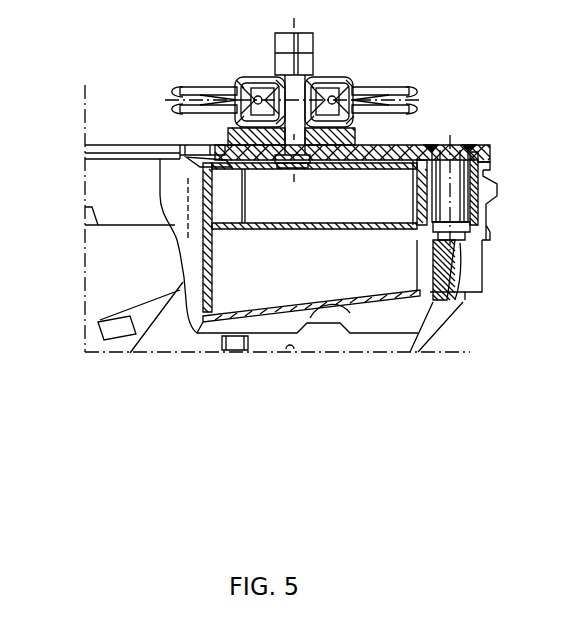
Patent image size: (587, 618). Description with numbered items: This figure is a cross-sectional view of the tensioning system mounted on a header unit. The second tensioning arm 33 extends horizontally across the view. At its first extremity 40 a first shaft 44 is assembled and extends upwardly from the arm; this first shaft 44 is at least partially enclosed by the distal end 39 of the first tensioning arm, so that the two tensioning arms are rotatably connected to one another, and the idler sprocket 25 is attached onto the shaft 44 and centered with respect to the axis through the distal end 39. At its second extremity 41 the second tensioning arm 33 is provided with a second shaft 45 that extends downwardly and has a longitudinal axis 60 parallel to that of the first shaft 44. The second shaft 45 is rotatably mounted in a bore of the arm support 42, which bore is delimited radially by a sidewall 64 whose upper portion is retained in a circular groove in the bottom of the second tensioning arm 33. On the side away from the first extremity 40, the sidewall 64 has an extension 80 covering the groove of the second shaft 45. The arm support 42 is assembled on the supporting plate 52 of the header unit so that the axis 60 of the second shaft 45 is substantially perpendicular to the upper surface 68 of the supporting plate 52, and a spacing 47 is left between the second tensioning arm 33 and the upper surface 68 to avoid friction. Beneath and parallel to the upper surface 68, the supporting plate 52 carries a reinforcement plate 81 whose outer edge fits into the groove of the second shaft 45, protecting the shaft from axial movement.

The idler sprocket 25 is at (213, 88).
The second tensioning arm 33 is at (380, 157).
The distal end 39 is at (235, 130).
The first extremity 40 is at (265, 150).
The second extremity 41 is at (488, 150).
The arm support 42 is at (497, 190).
The first shaft 44 is at (302, 87).
The second shaft 45 is at (458, 163).
The spacing 47 is at (418, 145).
The supporting plate 52 is at (277, 240).
The longitudinal axis 60 is at (450, 192).
The sidewall 64 is at (475, 177).
The upper surface 68 is at (183, 157).
The extension 80 is at (467, 248).
The reinforcement plate 81 is at (307, 228).